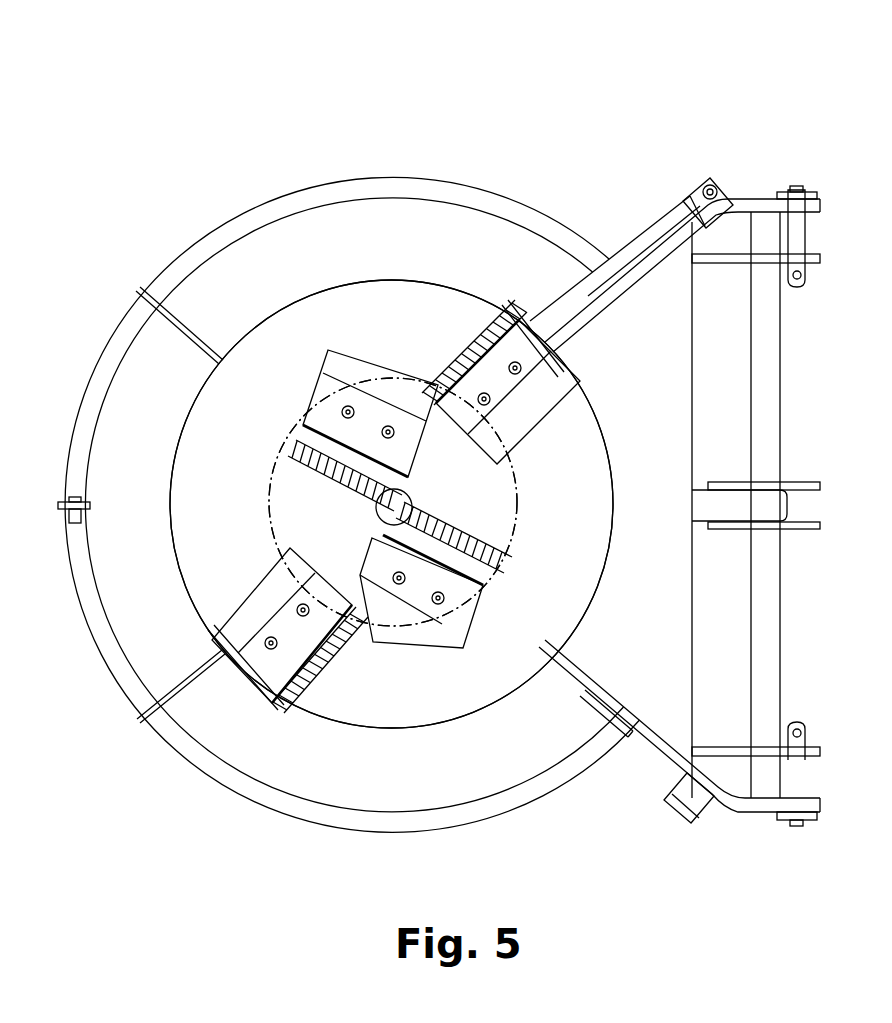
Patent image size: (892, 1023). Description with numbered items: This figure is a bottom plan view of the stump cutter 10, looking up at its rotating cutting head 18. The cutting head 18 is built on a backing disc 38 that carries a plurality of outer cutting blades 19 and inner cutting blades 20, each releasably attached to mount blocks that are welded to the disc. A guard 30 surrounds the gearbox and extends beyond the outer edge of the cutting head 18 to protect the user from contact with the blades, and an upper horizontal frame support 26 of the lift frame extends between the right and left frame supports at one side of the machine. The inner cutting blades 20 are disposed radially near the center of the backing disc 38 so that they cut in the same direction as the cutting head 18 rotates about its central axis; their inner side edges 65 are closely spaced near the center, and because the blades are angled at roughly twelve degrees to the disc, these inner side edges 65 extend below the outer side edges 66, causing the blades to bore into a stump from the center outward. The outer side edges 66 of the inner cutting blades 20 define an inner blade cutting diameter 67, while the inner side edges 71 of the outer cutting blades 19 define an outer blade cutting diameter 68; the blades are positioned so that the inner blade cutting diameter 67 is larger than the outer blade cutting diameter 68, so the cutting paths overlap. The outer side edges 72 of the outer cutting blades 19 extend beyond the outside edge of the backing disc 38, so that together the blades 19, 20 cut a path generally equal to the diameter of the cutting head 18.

The stump cutter 10 is at (742, 46).
The rotating cutting head 18 is at (172, 522).
The outer cutting blade 19 is at (490, 318).
The inner cutting blade 20 is at (360, 483).
The upper horizontal frame support 26 is at (651, 409).
The guard 30 is at (103, 640).
The backing disc 38 is at (228, 446).
The inner side edges of inner cutting blades 65 is at (372, 511).
The outer side edges of inner cutting blades 66 is at (292, 450).
The inner blade cutting diameter 67 is at (521, 506).
The outer blade cutting diameter 68 is at (272, 514).
The inner side edges of outer cutting blades 71 is at (424, 372).
The outer side edges of outer cutting blades 72 is at (508, 302).